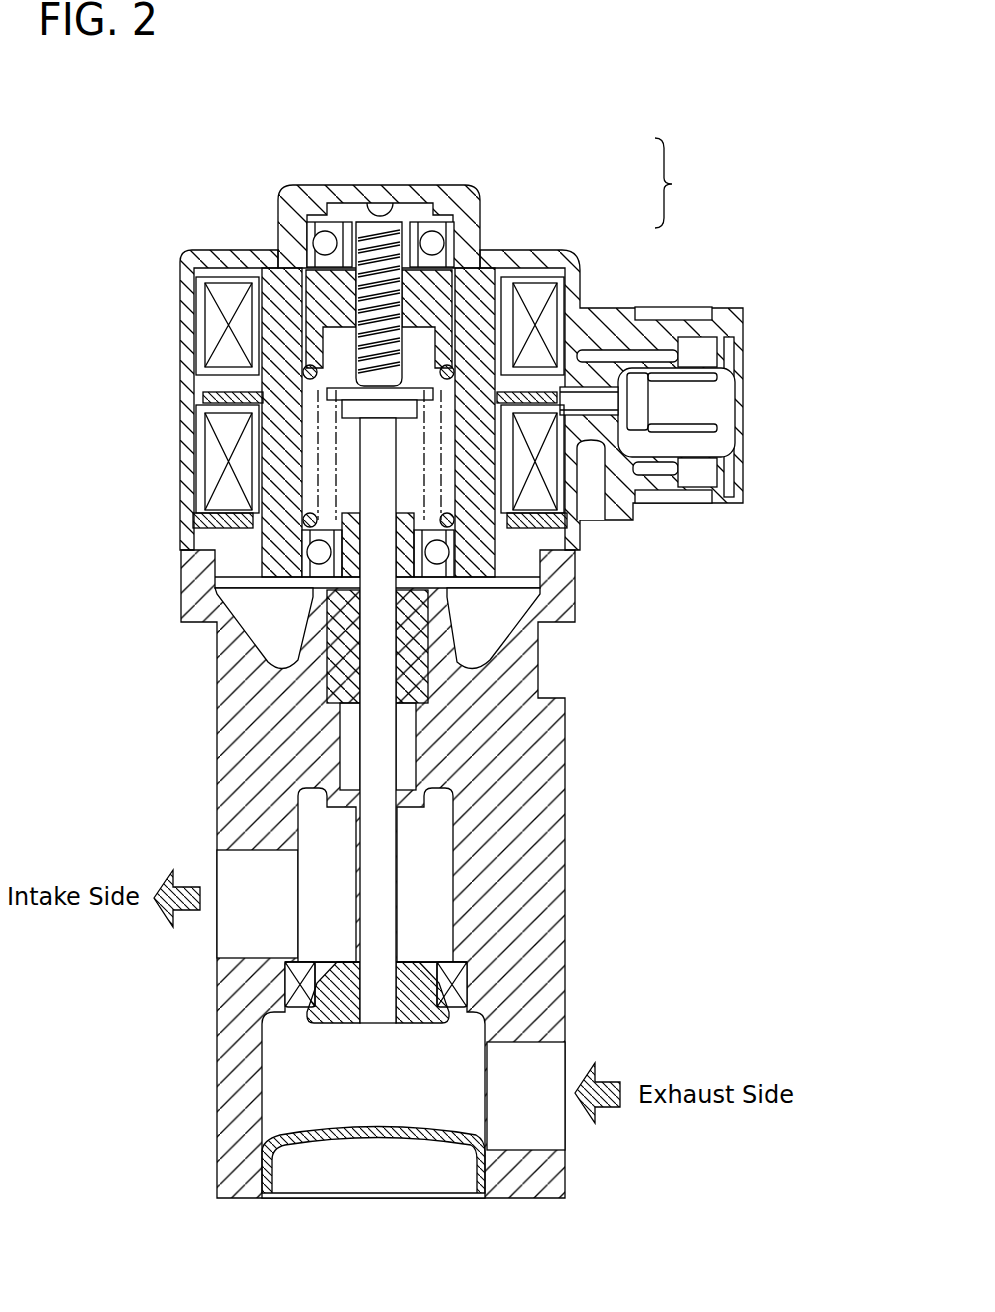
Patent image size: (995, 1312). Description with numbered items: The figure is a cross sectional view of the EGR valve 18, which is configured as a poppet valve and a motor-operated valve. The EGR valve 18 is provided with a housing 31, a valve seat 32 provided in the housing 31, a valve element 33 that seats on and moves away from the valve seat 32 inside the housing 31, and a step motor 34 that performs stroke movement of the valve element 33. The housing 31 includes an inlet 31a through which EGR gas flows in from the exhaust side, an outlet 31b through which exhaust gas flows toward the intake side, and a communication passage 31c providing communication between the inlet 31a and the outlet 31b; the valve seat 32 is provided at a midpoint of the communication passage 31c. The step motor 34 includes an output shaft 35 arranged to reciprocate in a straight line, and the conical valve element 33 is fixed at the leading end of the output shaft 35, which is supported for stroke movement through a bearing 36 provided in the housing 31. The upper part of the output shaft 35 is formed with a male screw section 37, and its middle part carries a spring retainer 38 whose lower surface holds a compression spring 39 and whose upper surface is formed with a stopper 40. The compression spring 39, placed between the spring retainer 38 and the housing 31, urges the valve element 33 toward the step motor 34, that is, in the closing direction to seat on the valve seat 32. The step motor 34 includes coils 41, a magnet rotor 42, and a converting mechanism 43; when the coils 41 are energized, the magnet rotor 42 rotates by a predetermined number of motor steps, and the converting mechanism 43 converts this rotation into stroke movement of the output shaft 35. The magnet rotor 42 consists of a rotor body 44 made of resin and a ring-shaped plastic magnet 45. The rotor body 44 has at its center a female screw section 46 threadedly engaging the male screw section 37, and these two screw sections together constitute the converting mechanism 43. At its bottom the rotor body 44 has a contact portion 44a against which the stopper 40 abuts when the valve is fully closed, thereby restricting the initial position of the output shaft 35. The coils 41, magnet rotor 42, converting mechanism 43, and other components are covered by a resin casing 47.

The EGR valve 18 is at (483, 103).
The housing 31 is at (242, 697).
The inlet 31a is at (565, 1140).
The outlet 31b is at (217, 948).
The communication passage 31c is at (435, 840).
The valve seat 32 is at (448, 992).
The valve element 33 is at (413, 948).
The step motor 34 is at (681, 183).
The output shaft 35 is at (378, 742).
The bearing 36 is at (418, 663).
The male screw section 37 is at (282, 252).
The spring retainer 38 is at (304, 378).
The compression spring 39 is at (327, 473).
The stopper 40 is at (587, 520).
The coils 41 is at (545, 268).
The magnet rotor 42 is at (445, 335).
The converting mechanism 43 is at (403, 325).
The rotor body 44 is at (215, 275).
The contact portion 44a is at (587, 322).
The plastic magnet 45 is at (470, 536).
The female screw section 46 is at (262, 308).
The resin casing 47 is at (193, 343).